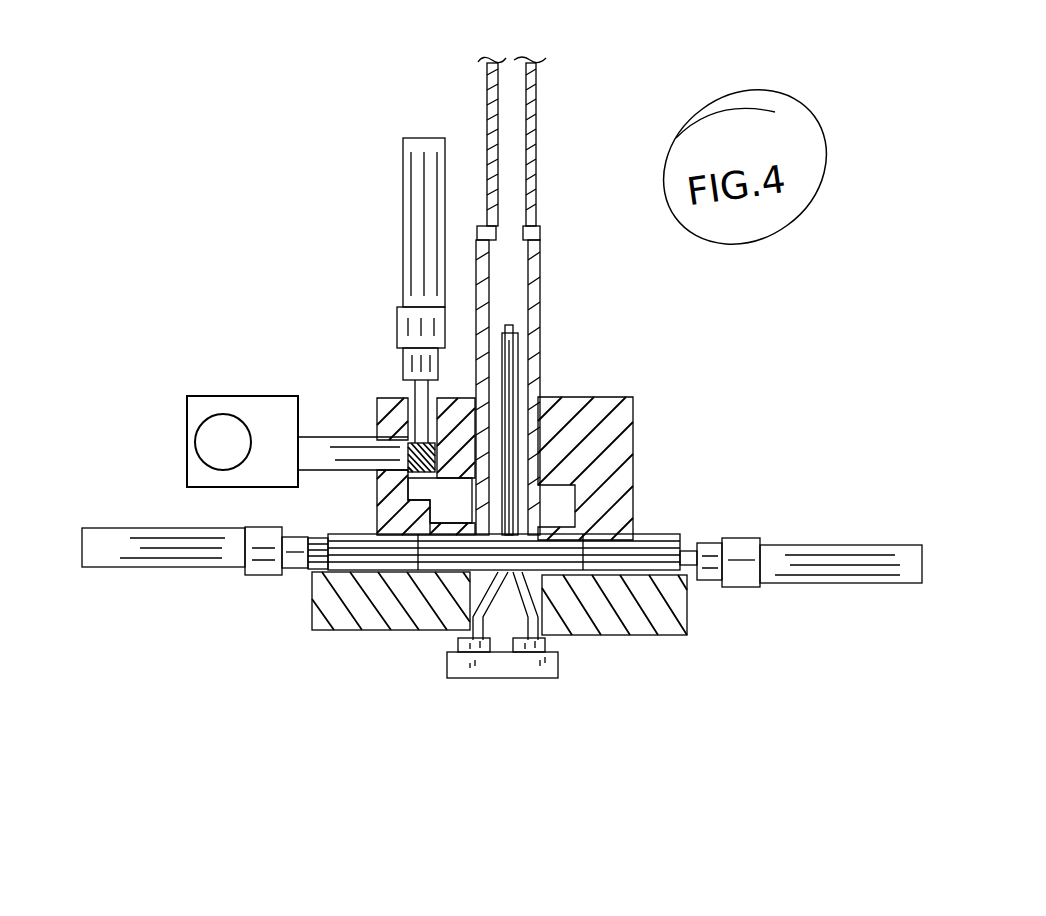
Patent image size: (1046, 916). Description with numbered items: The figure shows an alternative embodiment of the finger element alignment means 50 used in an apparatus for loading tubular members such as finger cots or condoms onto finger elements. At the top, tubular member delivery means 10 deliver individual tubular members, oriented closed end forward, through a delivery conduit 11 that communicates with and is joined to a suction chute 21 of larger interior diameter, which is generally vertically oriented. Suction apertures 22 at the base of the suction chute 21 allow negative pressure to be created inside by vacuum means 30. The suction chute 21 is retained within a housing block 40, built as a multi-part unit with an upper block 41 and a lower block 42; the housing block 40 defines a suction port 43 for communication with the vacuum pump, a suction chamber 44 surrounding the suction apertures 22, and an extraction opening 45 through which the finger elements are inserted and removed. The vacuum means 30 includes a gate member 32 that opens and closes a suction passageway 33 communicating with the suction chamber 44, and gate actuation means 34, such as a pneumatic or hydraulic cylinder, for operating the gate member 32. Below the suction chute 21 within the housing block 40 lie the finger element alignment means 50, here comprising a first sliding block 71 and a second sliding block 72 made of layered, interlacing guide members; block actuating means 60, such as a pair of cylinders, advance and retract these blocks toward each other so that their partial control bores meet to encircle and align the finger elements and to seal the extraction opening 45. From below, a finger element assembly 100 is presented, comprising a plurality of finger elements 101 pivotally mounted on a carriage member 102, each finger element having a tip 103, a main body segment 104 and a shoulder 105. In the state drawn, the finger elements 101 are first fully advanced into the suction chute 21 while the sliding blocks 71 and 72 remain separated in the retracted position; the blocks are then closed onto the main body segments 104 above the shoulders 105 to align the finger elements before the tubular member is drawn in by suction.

The tubular member delivery means 10 is at (610, 86).
The delivery conduit 11 is at (537, 146).
The suction chute 21 is at (540, 240).
The suction apertures 22 is at (580, 490).
The vacuum means 30 is at (334, 308).
The gate member 32 is at (410, 502).
The suction passageway 33 is at (395, 480).
The gate actuation means 34 is at (404, 180).
The housing block 40 is at (722, 433).
The upper block 41 is at (612, 397).
The lower block 42 is at (688, 624).
The suction port 43 is at (385, 442).
The suction chamber 44 is at (545, 500).
The extraction opening 45 is at (548, 600).
The finger element alignment means 50 is at (108, 492).
The block actuating means 60 is at (98, 572).
The first sliding block 71 is at (620, 574).
The second sliding block 72 is at (345, 564).
The finger element assembly 100 is at (507, 688).
The finger elements 101 is at (514, 306).
The carriage member 102 is at (558, 665).
The tip 103 is at (511, 324).
The main body segment 104 is at (518, 346).
The shoulder 105 is at (483, 600).